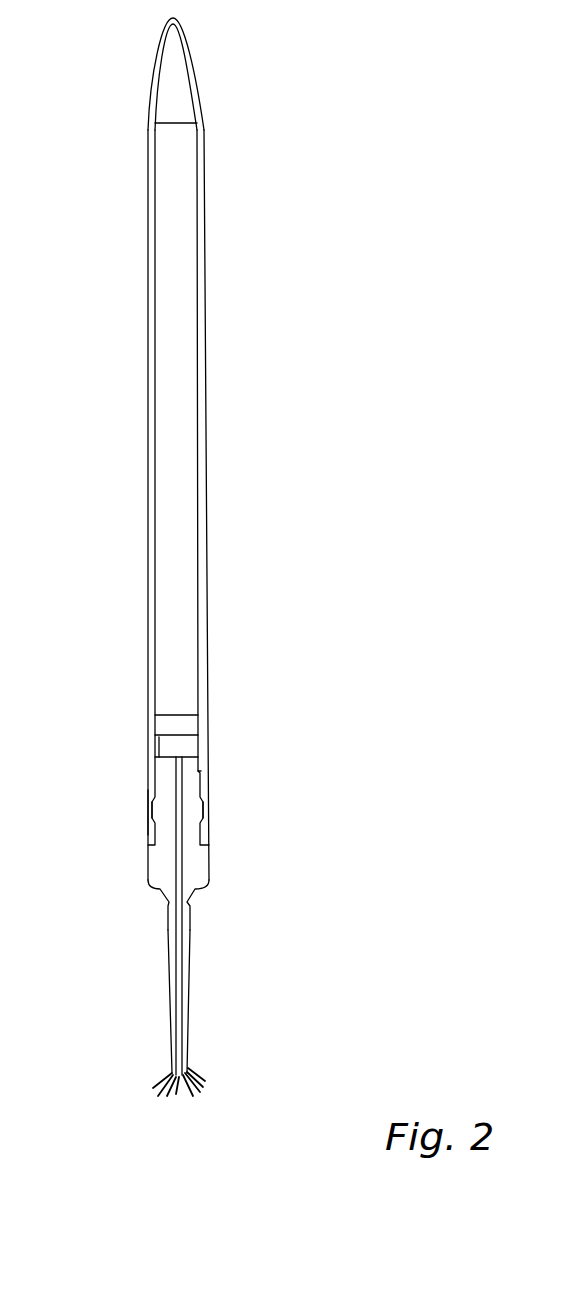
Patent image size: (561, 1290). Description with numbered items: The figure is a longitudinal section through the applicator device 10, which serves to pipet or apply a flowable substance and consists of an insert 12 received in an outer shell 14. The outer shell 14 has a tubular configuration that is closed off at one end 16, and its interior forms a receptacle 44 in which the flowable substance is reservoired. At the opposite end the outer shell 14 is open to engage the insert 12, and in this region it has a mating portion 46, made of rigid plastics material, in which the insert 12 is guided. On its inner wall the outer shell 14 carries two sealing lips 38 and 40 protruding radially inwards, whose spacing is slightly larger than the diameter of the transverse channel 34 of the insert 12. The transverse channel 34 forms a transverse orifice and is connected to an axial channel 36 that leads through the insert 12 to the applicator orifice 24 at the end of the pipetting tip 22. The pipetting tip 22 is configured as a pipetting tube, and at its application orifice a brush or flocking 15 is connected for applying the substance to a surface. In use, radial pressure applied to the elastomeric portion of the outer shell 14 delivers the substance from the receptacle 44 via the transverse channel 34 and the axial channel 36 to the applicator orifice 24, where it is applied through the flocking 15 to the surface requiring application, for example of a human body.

The applicator device 10 is at (366, 82).
The insert 12 is at (148, 876).
The outer shell 14 is at (205, 497).
The flocking 15 is at (215, 1071).
The closed end 16 is at (191, 58).
The pipetting tip 22 is at (190, 1003).
The applicator orifice 24 is at (182, 1093).
The transverse channel 34 is at (190, 745).
The axial channel 36 is at (173, 963).
The sealing lip 38 is at (204, 795).
The sealing lip 40 is at (203, 773).
The receptacle 44 is at (178, 327).
The mating portion 46 is at (148, 797).